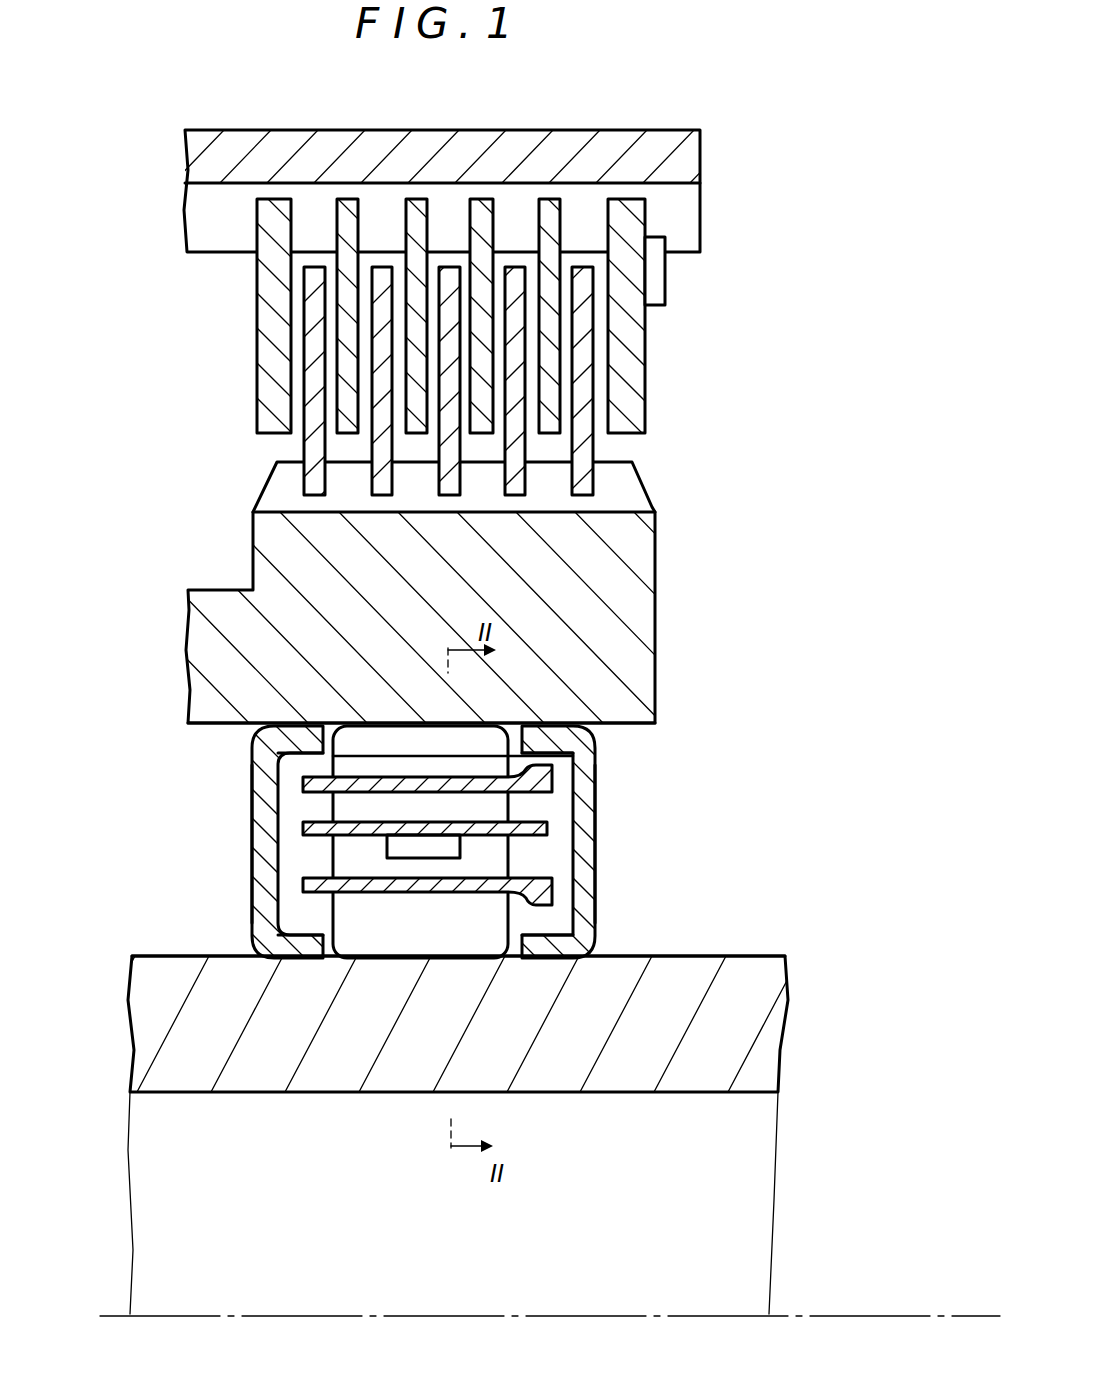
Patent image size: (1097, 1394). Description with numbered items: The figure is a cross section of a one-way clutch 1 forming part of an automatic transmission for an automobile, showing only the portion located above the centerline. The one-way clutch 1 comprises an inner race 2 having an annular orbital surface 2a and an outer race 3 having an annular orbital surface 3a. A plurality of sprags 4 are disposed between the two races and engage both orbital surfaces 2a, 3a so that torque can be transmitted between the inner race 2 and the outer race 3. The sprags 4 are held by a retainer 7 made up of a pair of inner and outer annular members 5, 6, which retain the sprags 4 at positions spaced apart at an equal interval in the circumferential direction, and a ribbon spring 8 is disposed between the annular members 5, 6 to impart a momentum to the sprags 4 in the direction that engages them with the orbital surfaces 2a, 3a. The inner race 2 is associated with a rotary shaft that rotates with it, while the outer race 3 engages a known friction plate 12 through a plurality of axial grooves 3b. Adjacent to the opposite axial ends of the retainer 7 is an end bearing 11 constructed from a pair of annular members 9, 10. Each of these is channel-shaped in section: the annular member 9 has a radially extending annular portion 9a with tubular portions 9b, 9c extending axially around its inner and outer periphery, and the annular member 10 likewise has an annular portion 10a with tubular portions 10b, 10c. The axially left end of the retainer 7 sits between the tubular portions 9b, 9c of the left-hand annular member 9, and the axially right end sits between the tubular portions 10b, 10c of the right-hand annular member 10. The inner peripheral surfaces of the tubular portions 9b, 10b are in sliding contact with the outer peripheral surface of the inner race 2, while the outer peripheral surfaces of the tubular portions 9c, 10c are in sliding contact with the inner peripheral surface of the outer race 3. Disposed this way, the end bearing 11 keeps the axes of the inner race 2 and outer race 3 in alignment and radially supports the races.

The one-way clutch 1 is at (156, 666).
The inner race 2 is at (768, 1022).
The annular orbital surface 2a is at (154, 954).
The outer race 3 is at (642, 678).
The annular orbital surface 3a is at (234, 730).
The axial grooves 3b is at (632, 483).
The sprags 4 is at (496, 935).
The inner annular member 5 is at (552, 880).
The outer annular member 6 is at (553, 794).
The retainer 7 is at (428, 835).
The ribbon spring 8 is at (468, 840).
The annular member 9 is at (421, 842).
The annular portion 9a is at (257, 851).
The tubular portion 9b is at (293, 921).
The tubular portion 9c is at (300, 755).
The annular member 10 is at (421, 945).
The annular portion 10a is at (585, 796).
The tubular portion 10b is at (550, 950).
The tubular portion 10c is at (522, 750).
The end bearing 11 is at (421, 945).
The friction plate 12 is at (660, 371).